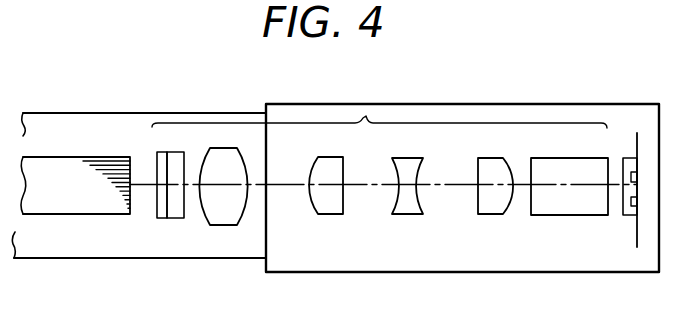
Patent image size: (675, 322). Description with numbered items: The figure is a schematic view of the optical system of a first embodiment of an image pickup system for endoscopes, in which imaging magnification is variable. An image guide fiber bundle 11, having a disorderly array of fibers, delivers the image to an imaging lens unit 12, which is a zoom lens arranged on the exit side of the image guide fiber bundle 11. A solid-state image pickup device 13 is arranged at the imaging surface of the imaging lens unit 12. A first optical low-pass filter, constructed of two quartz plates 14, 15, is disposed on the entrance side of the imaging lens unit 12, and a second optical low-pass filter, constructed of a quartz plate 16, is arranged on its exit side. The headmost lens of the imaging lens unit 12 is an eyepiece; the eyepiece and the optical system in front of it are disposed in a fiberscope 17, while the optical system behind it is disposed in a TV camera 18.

The image guide fiber bundle 11 is at (102, 203).
The imaging lens unit 12 is at (364, 117).
The solid-state image pickup device 13 is at (628, 215).
The quartz plate 14 is at (163, 218).
The quartz plate 15 is at (177, 218).
The quartz plate 16 is at (560, 215).
The fiberscope 17 is at (118, 113).
The TV camera 18 is at (533, 104).